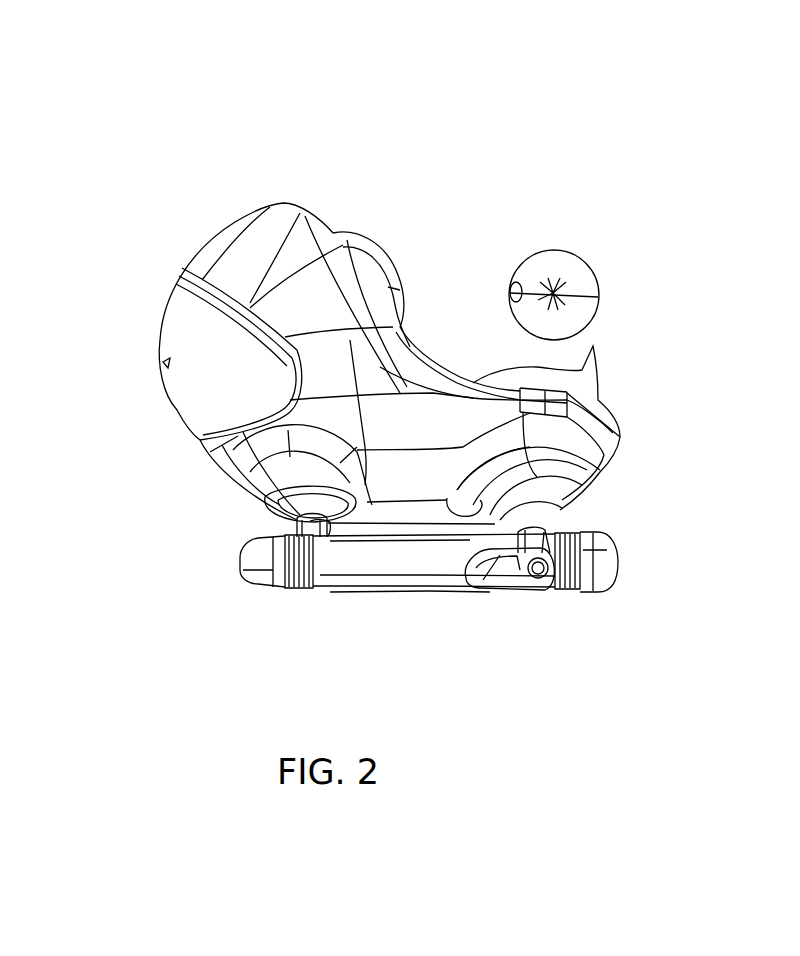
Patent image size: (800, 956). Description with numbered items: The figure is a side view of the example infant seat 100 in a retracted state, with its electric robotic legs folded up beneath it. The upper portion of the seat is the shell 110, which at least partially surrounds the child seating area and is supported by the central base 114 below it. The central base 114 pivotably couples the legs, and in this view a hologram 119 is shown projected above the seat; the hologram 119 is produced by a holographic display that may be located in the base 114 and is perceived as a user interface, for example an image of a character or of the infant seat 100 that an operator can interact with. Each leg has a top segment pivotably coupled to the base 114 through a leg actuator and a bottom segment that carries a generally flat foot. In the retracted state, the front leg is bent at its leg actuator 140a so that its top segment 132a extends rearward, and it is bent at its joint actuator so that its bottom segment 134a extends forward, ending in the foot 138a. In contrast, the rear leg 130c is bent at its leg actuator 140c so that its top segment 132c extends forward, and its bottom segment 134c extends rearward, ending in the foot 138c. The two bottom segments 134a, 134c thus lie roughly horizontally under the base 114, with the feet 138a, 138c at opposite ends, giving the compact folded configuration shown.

The infant seat 100 is at (220, 120).
The shell 110 is at (218, 234).
The central base 114 is at (228, 476).
The hologram 119 is at (578, 257).
The rear leg 130c is at (645, 442).
The top segment 132a is at (300, 527).
The top segment 132c is at (542, 531).
The bottom segment 134a is at (485, 589).
The bottom segment 134c is at (330, 586).
The foot 138a is at (603, 583).
The foot 138c is at (246, 576).
The leg actuator 140a is at (294, 518).
The leg actuator 140c is at (550, 512).